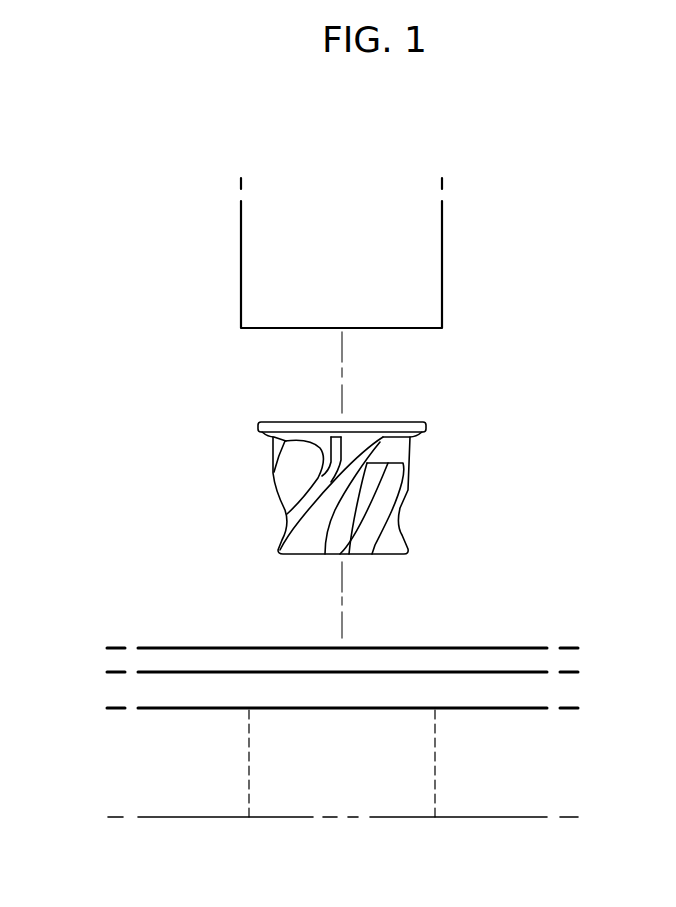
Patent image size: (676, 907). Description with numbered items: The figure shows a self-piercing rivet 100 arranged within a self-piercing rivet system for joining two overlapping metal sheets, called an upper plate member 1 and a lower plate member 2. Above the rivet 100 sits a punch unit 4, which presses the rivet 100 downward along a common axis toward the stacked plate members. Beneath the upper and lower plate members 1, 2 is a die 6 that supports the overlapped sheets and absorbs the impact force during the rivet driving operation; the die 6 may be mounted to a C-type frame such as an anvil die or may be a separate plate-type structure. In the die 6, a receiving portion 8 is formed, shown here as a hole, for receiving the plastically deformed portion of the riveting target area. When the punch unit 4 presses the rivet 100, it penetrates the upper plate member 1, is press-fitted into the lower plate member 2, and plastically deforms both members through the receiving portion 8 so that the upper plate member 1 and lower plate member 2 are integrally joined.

The punch unit 4 is at (240, 264).
The self-piercing rivet 100 is at (443, 461).
The upper plate member 1 is at (160, 650).
The lower plate member 2 is at (160, 700).
The receiving portion 8 is at (436, 762).
The die 6 is at (280, 818).